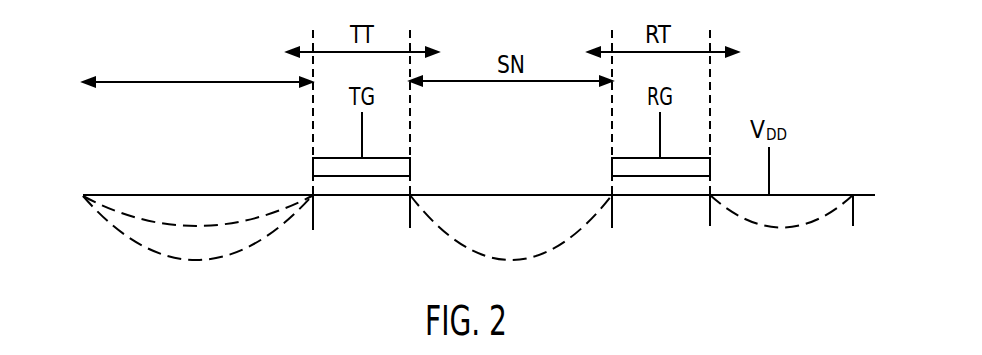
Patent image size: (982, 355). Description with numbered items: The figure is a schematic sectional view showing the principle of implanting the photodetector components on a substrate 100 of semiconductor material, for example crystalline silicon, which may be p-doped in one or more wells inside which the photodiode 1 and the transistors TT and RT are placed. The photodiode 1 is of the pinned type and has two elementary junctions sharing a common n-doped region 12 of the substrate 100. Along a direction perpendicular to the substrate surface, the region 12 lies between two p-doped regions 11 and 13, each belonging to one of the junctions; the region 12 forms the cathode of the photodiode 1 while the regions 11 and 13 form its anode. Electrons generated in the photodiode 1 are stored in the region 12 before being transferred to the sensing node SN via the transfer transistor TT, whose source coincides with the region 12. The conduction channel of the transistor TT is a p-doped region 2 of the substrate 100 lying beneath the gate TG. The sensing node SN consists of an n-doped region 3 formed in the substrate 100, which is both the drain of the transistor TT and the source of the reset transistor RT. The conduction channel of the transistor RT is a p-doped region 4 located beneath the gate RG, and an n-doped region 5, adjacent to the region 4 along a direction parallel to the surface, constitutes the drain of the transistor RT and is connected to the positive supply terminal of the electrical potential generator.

The photodiode 1 is at (197, 68).
The p-doped region 2 is at (369, 232).
The n-doped region 3 is at (528, 244).
The p-doped region 4 is at (669, 234).
The n-doped region 5 is at (798, 226).
The p-doped region 11 is at (226, 223).
The n-doped region 12 is at (226, 257).
The p-doped region 13 is at (226, 294).
The substrate 100 is at (116, 274).